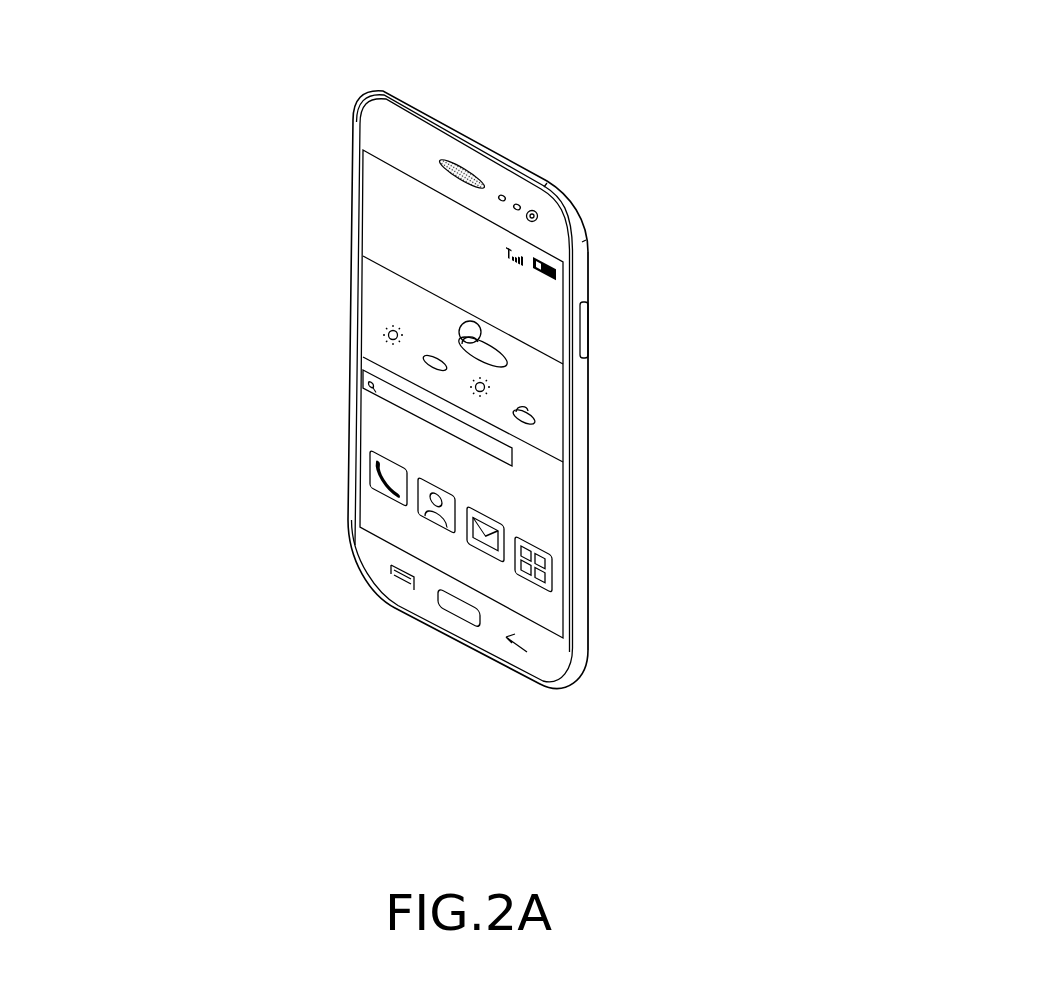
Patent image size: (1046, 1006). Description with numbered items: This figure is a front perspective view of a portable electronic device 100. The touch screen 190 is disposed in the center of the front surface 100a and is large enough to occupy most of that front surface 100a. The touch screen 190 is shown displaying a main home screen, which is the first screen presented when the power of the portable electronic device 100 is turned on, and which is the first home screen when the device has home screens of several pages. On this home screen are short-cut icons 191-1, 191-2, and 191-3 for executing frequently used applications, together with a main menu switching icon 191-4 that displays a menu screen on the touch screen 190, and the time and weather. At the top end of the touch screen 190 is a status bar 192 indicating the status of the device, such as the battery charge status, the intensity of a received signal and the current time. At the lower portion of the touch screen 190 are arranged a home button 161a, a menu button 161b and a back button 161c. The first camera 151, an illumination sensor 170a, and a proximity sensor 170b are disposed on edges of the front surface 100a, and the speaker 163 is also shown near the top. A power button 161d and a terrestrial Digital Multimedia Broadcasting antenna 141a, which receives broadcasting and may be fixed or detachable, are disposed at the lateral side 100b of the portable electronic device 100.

The portable electronic device 100 is at (324, 61).
The front surface 100a is at (368, 133).
The lateral side 100b is at (580, 436).
The terrestrial Digital Multimedia Broadcasting (DMB) antenna 141a is at (571, 208).
The first camera 151 is at (533, 211).
The home button 161a is at (462, 608).
The menu button 161b is at (393, 568).
The back button 161c is at (516, 650).
The power button 161d is at (586, 332).
The speaker 163 is at (437, 153).
The illumination sensor 170a is at (502, 195).
The proximity sensor 170b is at (518, 204).
The touch screen 190 is at (373, 347).
The short-cut icon 191-1 is at (385, 456).
The short-cut icon 191-2 is at (432, 480).
The short-cut icon 191-3 is at (493, 513).
The main menu switching icon 191-4 is at (538, 540).
The status bar 192 is at (372, 168).